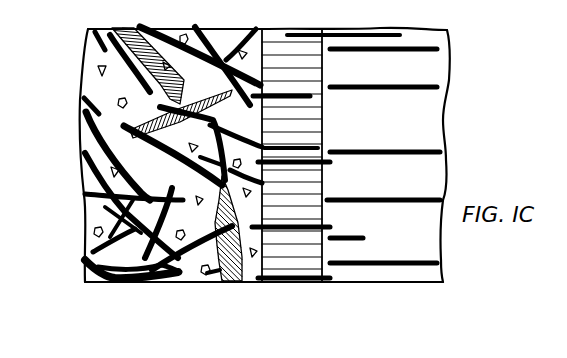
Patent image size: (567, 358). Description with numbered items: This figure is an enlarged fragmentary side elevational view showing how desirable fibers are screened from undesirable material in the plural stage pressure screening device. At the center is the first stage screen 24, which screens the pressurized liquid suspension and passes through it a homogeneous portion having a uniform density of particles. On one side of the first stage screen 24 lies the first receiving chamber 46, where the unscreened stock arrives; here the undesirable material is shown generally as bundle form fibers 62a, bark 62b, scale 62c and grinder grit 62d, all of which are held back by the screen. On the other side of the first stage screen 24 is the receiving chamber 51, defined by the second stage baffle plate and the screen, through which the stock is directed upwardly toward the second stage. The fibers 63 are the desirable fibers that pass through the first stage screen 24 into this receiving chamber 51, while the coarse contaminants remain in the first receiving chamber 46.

The first stage screen 24 is at (327, 270).
The first receiving chamber 46 is at (218, 35).
The receiving chamber 51 is at (398, 275).
The bundle form fibers 62a is at (112, 283).
The bark 62b is at (152, 57).
The scale 62c is at (98, 66).
The grinder grit 62d is at (193, 283).
The fibers 63 is at (410, 87).